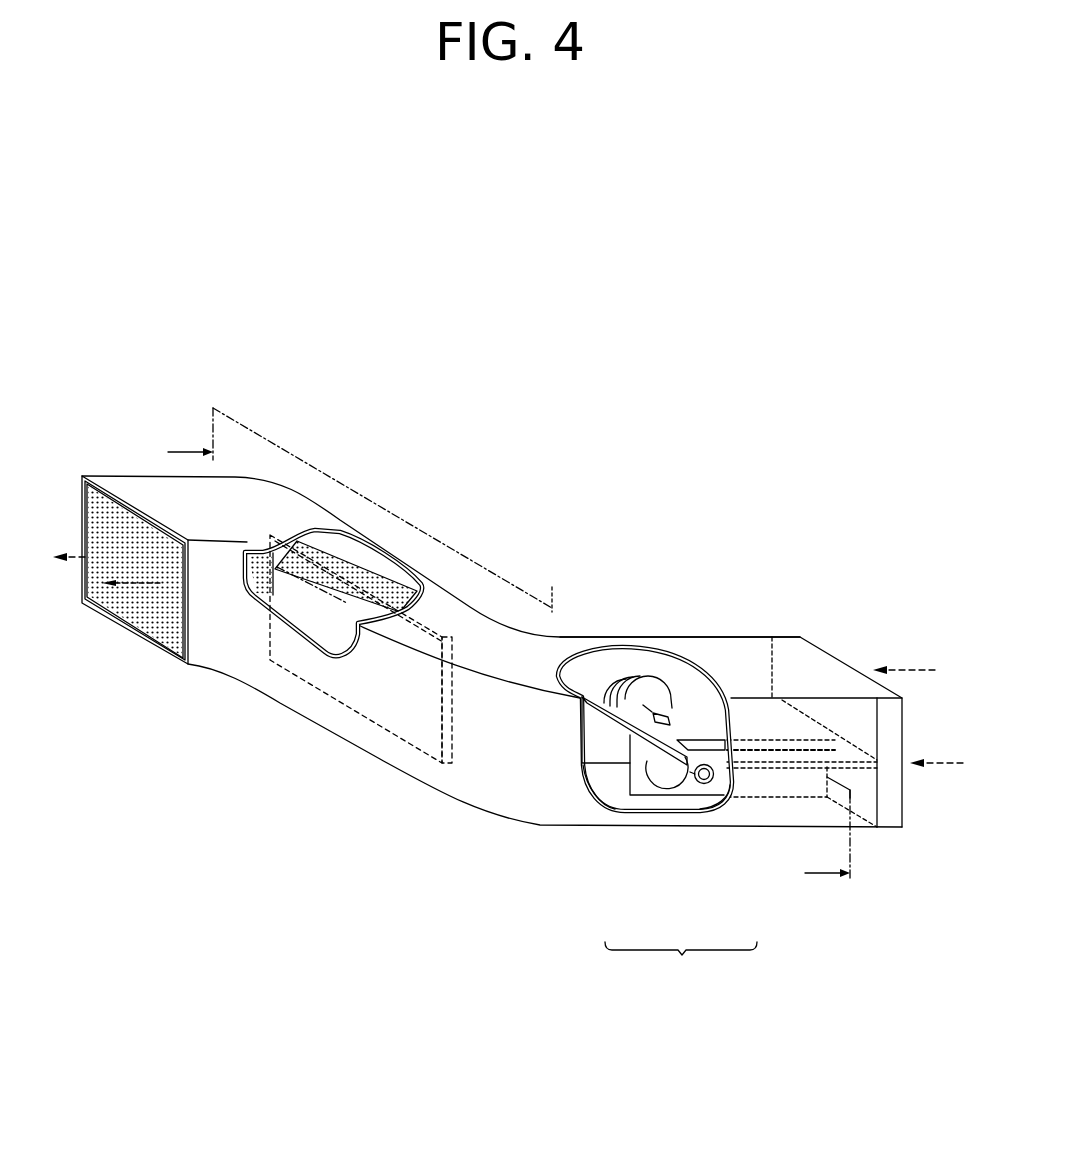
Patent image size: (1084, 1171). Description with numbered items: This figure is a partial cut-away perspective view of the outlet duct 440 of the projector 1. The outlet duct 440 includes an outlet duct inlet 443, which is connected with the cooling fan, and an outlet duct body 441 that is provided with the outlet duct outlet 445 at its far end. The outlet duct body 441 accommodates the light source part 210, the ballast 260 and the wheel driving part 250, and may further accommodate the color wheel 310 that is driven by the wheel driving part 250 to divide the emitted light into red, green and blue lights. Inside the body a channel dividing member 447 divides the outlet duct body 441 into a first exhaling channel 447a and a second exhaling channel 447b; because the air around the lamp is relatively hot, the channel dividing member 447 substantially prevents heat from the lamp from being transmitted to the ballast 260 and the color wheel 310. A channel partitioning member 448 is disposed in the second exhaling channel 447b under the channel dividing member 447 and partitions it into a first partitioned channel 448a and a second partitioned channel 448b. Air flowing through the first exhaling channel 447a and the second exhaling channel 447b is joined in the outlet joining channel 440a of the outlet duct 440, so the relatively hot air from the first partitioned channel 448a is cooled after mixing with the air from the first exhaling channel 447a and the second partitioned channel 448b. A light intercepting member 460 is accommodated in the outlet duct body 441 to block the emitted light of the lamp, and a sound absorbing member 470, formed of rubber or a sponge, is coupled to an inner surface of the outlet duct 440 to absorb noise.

The dust collecting / air cleaning apparatus 1 is at (651, 422).
The light source part 210 is at (680, 785).
The wheel driving part 250 is at (697, 743).
The ballast 260 is at (707, 707).
The color wheel 310 is at (593, 670).
The outlet duct 440 is at (438, 808).
The outlet joining channel 440a is at (242, 495).
The outlet duct body 441 is at (358, 742).
The outlet duct inlet 443 is at (809, 685).
The outlet duct outlet 445 is at (117, 530).
The channel dividing member 447 is at (618, 753).
The first exhaling channel 447a is at (660, 679).
The second exhaling channel 447b is at (681, 962).
The channel partitioning member 448 is at (653, 790).
The first partitioned channel 448a is at (623, 793).
The second partitioned channel 448b is at (723, 797).
The light intercepting member 460 is at (268, 603).
The sound absorbing member 470 is at (358, 563).